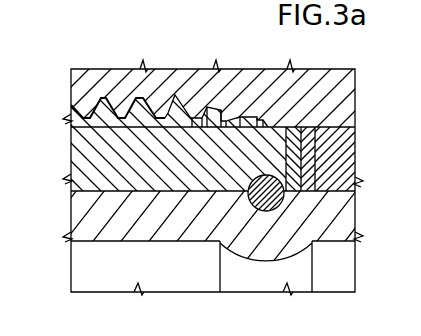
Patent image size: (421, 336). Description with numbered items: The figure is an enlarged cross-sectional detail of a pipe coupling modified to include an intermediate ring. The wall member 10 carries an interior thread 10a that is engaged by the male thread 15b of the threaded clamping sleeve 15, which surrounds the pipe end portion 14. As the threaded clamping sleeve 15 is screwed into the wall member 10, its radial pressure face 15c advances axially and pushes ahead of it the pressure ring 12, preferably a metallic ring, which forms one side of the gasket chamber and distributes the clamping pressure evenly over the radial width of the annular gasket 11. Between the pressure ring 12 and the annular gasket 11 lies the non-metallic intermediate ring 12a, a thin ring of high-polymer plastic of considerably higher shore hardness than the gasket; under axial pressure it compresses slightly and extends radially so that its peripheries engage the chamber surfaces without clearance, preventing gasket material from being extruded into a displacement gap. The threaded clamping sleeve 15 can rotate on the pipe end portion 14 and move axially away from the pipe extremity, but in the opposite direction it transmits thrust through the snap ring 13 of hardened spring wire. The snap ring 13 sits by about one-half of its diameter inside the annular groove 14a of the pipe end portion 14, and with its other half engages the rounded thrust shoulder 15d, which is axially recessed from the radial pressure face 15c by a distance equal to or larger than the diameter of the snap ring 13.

The wall member 10 is at (66, 82).
The interior thread 10a is at (124, 108).
The annular gasket 11 is at (348, 140).
The pressure ring 12 is at (295, 127).
The intermediate ring 12a is at (348, 122).
The snap ring 13 is at (263, 208).
The pipe end portion 14 is at (64, 213).
The annular groove 14a is at (222, 255).
The threaded clamping sleeve 15 is at (64, 164).
The male thread 15b is at (105, 109).
The radial pressure face 15c is at (227, 81).
The rounded thrust shoulder 15d is at (276, 196).